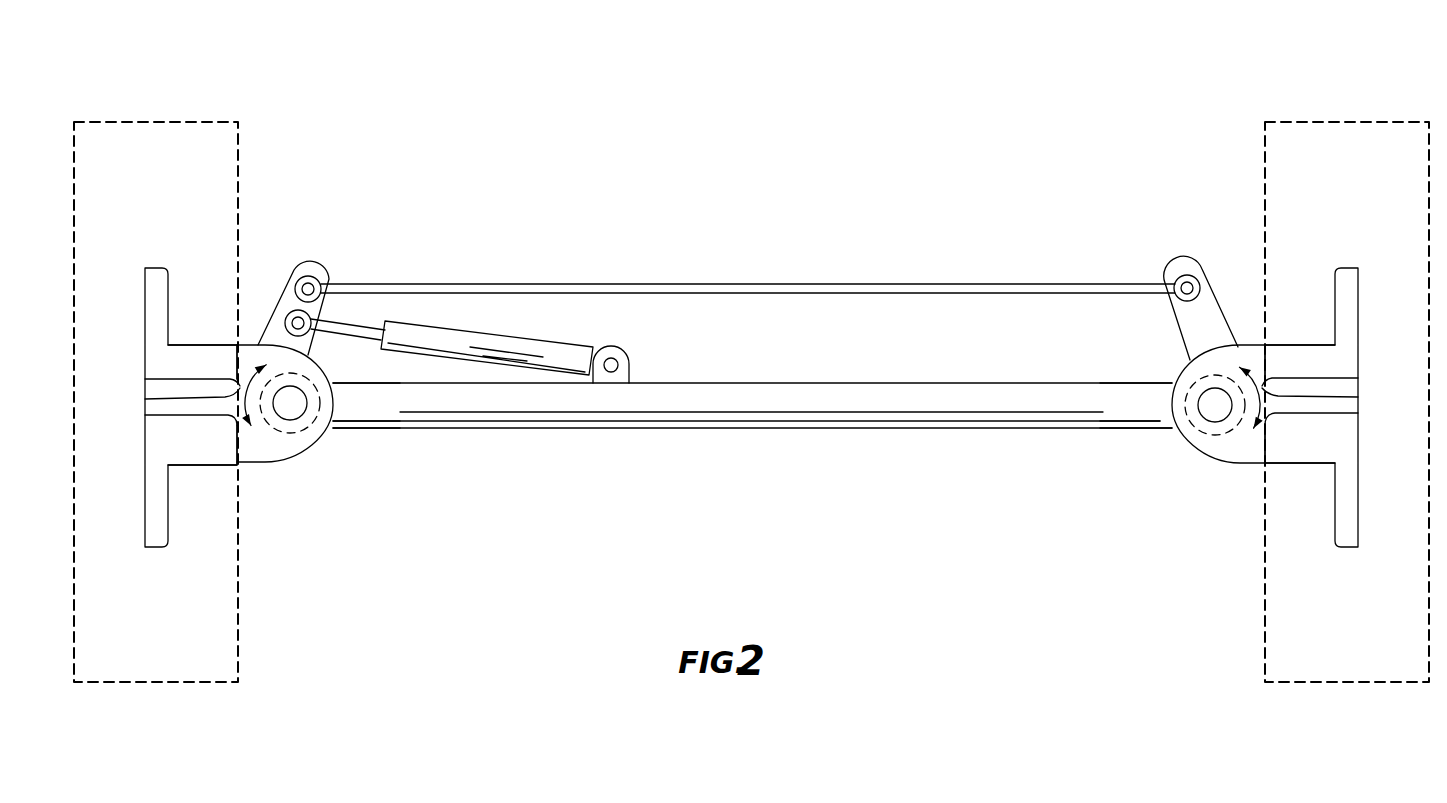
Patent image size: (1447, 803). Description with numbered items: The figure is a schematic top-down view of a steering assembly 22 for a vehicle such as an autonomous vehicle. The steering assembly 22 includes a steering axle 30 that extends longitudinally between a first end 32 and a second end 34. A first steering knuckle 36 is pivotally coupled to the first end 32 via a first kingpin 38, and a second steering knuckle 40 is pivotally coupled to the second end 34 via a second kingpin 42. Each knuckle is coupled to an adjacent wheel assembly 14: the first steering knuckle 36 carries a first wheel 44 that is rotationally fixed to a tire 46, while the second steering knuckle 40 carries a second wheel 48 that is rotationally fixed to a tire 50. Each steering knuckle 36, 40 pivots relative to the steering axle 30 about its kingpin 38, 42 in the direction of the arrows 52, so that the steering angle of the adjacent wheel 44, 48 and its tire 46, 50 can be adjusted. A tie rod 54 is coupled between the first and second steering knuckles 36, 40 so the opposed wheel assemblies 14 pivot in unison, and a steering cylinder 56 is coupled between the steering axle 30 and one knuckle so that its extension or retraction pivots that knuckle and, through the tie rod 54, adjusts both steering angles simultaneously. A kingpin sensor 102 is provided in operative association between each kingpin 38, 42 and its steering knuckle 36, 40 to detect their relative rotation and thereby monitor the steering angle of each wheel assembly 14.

The wheel assembly 14 is at (93, 80).
The steering assembly 22 is at (838, 148).
The steering axle 30 is at (694, 443).
The first end 32 is at (348, 415).
The second end 34 is at (1158, 407).
The first steering knuckle 36 is at (266, 448).
The first kingpin 38 is at (303, 432).
The second steering knuckle 40 is at (1245, 450).
The second kingpin 42 is at (1193, 430).
The first wheel 44 is at (205, 355).
The tire 46 is at (205, 122).
The second wheel 48 is at (1302, 357).
The tire 50 is at (1287, 120).
The arrows 52 is at (252, 392).
The tie rod 54 is at (682, 290).
The steering cylinder 56 is at (505, 345).
The kingpin sensor 102 is at (306, 413).